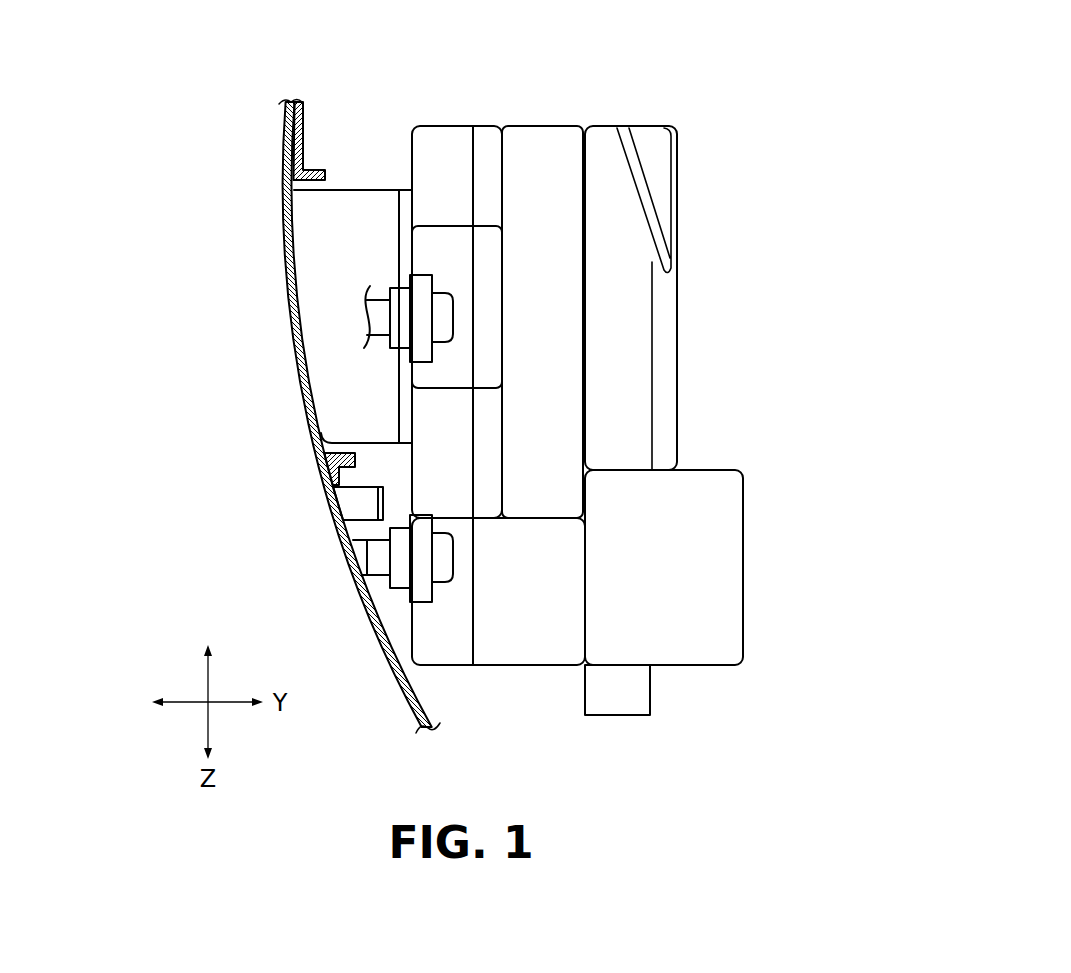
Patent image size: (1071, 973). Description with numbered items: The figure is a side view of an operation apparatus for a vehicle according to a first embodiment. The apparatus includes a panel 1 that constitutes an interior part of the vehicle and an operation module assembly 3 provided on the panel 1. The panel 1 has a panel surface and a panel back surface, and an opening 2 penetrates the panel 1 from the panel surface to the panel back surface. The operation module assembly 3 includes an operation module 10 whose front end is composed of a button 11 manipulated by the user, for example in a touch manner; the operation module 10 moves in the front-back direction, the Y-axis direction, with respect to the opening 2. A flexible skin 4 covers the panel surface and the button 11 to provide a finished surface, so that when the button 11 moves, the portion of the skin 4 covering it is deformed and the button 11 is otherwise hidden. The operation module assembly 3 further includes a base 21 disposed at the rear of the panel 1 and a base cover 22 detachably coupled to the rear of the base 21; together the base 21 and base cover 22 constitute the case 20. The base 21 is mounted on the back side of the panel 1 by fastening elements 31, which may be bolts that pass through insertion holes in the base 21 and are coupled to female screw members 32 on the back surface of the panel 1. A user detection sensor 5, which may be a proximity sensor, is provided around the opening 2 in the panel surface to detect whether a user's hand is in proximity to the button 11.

The panel 1 is at (303, 128).
The opening 2 is at (319, 186).
The operation module assembly 3 is at (504, 363).
The skin 4 is at (357, 602).
The user detection sensor 5 is at (342, 502).
The operation module 10 is at (317, 257).
The button 11 is at (312, 340).
The case 20 is at (498, 338).
The base 21 is at (443, 128).
The base cover 22 is at (542, 288).
The fastening elements 31 is at (452, 312).
The female screw members 32 is at (367, 557).